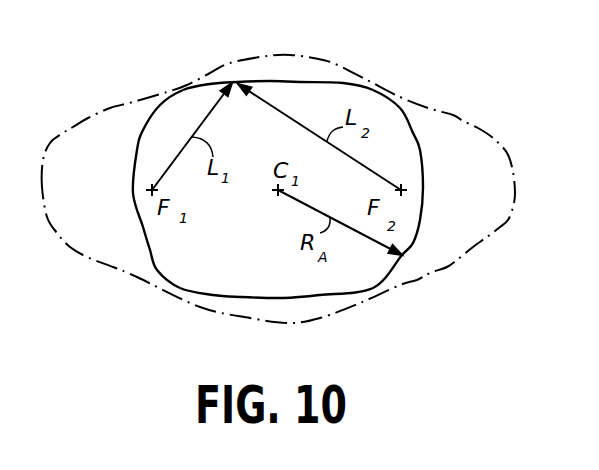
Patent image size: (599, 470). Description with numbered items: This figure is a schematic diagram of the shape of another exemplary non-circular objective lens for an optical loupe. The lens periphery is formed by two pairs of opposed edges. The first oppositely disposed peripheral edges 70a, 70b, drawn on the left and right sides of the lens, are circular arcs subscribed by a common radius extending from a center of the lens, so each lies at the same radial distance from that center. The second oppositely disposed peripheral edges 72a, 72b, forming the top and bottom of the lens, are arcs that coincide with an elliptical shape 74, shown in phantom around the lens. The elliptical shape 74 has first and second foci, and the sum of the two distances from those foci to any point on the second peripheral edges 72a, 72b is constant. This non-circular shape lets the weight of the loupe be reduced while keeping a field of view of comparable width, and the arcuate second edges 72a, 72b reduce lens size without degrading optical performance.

The first peripheral edge 70a is at (133, 190).
The first peripheral edge 70b is at (423, 187).
The second peripheral edge 72a is at (345, 81).
The second peripheral edge 72b is at (217, 297).
The elliptical shape 74 is at (450, 110).